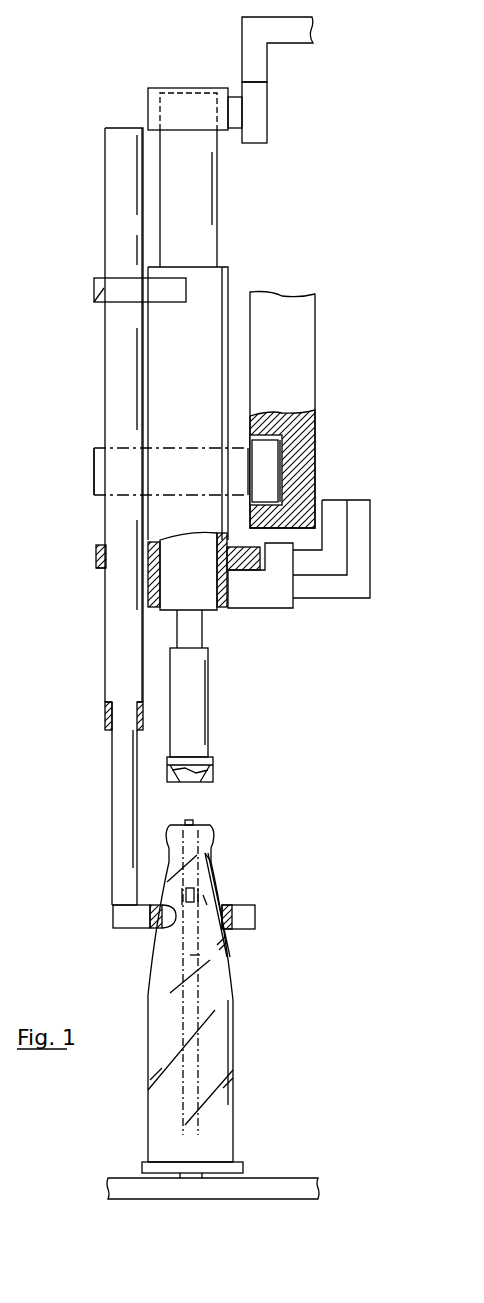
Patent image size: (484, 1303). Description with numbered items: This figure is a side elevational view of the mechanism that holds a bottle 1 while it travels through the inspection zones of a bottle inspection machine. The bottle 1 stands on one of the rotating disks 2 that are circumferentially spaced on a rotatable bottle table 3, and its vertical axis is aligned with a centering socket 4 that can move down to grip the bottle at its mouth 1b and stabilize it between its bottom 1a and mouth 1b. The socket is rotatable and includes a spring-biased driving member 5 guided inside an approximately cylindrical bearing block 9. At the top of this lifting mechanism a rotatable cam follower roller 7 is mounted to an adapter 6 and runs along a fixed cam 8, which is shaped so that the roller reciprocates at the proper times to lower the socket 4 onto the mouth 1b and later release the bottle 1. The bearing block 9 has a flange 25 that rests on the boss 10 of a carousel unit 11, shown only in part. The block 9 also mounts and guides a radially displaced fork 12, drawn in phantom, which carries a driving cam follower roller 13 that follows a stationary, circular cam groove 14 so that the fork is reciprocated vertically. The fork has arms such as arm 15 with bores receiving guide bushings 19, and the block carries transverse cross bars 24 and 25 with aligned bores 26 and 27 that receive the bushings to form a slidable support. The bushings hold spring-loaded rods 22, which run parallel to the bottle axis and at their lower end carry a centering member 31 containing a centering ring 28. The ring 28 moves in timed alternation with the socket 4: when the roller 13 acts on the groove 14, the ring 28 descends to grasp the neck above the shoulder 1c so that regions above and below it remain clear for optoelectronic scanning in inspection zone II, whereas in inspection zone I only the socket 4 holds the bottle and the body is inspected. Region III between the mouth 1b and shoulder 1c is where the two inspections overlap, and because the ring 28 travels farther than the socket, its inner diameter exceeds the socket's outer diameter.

The bottle 1 is at (152, 952).
The bottle bottom 1a is at (233, 1160).
The bottle mouth 1b is at (208, 822).
The bottle shoulder 1c is at (165, 902).
The rotating disk 2 is at (147, 1170).
The rotatable bottle table 3 is at (118, 1190).
The centering socket member 4 is at (213, 762).
The driving member 5 is at (196, 633).
The adapter 6 is at (193, 100).
The cam follower roller 7 is at (258, 100).
The cam 8 is at (262, 68).
The cylindrical bearing block 9 is at (148, 407).
The boss 10 is at (280, 590).
The carousel unit 11 is at (370, 531).
The fork 12 is at (104, 470).
The driving cam follower roller 13 is at (270, 480).
The stationary cam groove 14 is at (277, 430).
The fork arm 15 is at (93, 452).
The guide bushing 19 is at (105, 638).
The holding rod 22 is at (118, 828).
The transverse element 24 is at (93, 280).
The flange 25 is at (95, 548).
The bore 26 is at (100, 292).
The bore 27 is at (103, 568).
The centering ring 28 is at (152, 931).
The centering member 31 is at (255, 918).
The inspection zone I is at (195, 960).
The inspection zone II is at (200, 857).
The overlap region III is at (205, 898).